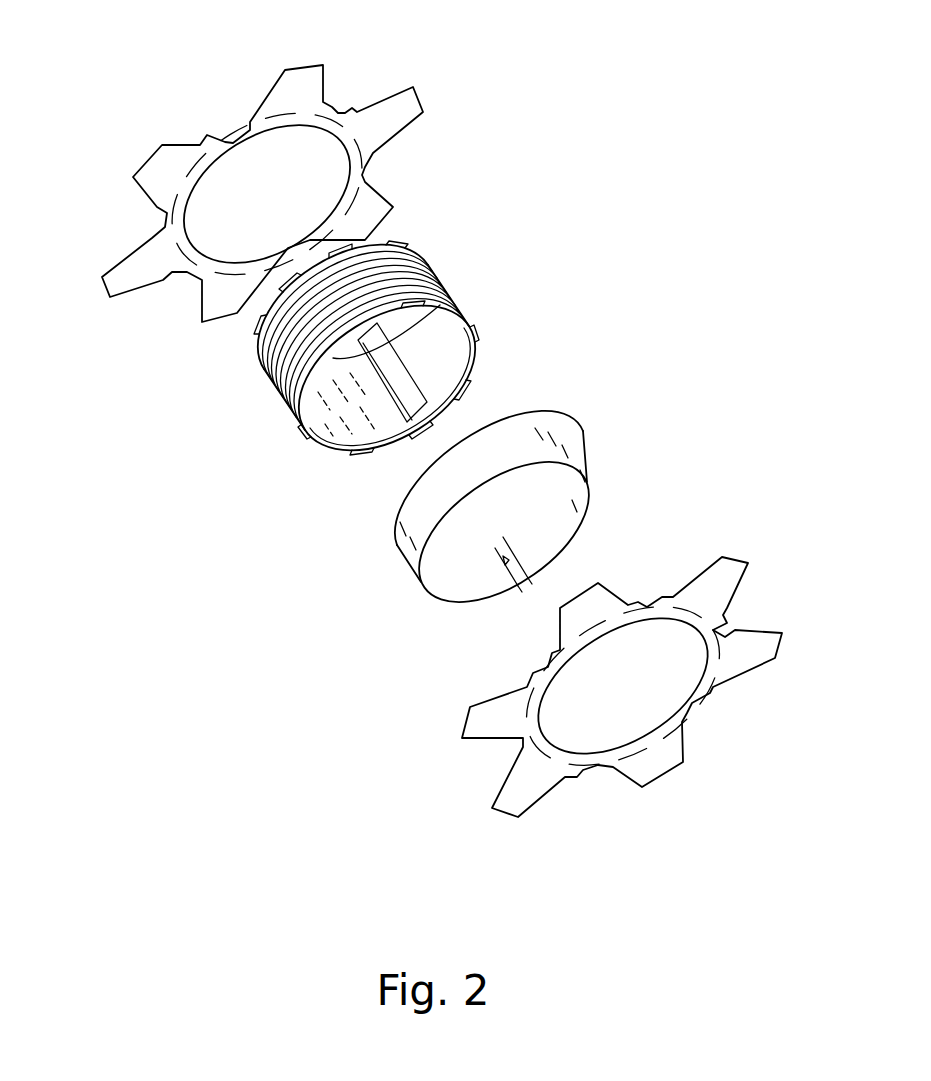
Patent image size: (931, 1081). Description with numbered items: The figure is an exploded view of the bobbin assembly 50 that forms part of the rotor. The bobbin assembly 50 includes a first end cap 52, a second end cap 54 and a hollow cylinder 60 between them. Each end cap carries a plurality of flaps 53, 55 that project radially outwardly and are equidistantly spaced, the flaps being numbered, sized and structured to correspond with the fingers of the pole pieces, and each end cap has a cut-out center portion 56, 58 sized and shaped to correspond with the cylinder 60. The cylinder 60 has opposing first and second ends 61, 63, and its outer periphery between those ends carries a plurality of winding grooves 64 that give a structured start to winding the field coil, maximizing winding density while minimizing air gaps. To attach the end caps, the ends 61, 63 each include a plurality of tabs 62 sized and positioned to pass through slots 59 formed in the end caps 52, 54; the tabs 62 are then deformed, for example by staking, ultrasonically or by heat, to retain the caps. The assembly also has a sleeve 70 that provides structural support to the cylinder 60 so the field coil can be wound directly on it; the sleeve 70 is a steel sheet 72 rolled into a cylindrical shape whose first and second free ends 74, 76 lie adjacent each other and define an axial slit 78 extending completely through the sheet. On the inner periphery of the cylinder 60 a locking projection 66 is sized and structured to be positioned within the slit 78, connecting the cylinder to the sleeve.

The bobbin assembly 50 is at (603, 145).
The first end cap 52 is at (202, 135).
The flaps 53 is at (302, 68).
The second end cap 54 is at (513, 740).
The flaps 55 is at (557, 620).
The cut-out center portion 56 is at (298, 130).
The cut-out center portion 58 is at (647, 624).
The slots 59 is at (348, 152).
The hollow cylinder 60 is at (290, 395).
The first end 61 is at (262, 370).
The tabs 62 is at (403, 243).
The second end 63 is at (328, 448).
The winding grooves 64 is at (437, 280).
The locking projection 66 is at (428, 383).
The sleeve 70 is at (570, 457).
The steel sheet 72 is at (405, 563).
The first free end 74 is at (503, 538).
The second free end 76 is at (530, 580).
The slit 78 is at (505, 562).